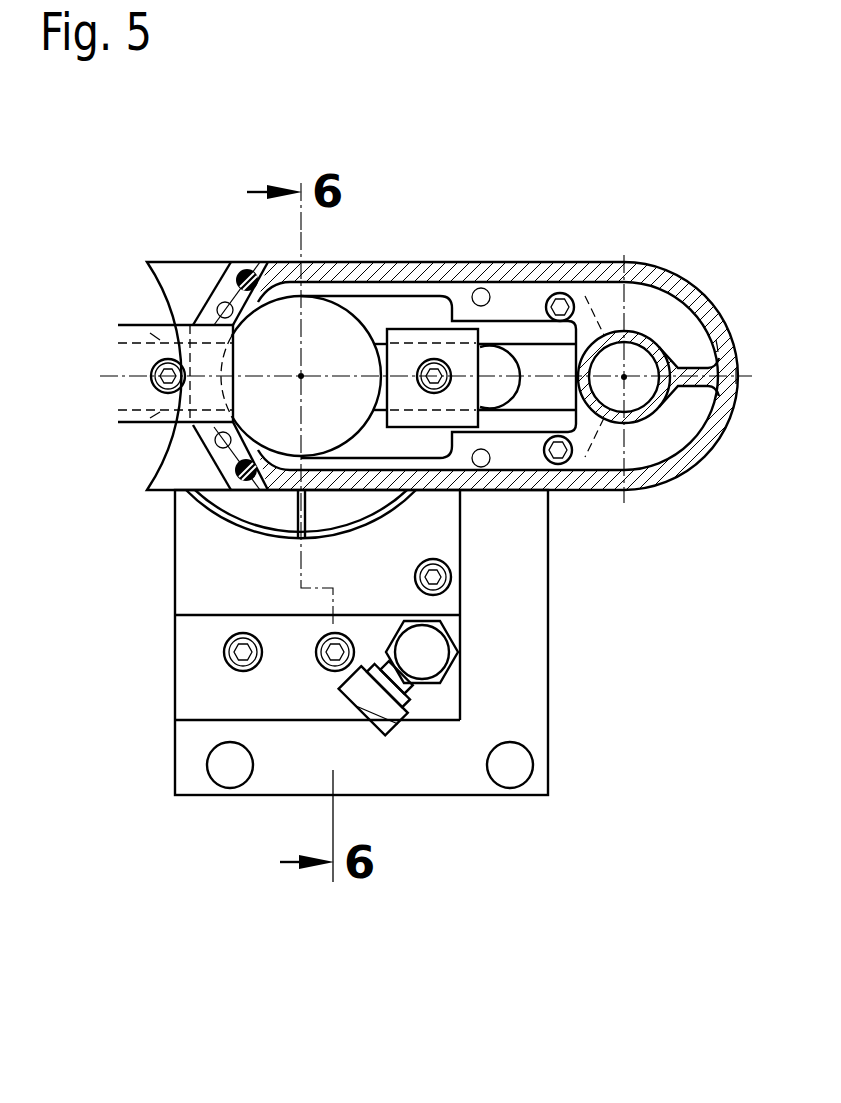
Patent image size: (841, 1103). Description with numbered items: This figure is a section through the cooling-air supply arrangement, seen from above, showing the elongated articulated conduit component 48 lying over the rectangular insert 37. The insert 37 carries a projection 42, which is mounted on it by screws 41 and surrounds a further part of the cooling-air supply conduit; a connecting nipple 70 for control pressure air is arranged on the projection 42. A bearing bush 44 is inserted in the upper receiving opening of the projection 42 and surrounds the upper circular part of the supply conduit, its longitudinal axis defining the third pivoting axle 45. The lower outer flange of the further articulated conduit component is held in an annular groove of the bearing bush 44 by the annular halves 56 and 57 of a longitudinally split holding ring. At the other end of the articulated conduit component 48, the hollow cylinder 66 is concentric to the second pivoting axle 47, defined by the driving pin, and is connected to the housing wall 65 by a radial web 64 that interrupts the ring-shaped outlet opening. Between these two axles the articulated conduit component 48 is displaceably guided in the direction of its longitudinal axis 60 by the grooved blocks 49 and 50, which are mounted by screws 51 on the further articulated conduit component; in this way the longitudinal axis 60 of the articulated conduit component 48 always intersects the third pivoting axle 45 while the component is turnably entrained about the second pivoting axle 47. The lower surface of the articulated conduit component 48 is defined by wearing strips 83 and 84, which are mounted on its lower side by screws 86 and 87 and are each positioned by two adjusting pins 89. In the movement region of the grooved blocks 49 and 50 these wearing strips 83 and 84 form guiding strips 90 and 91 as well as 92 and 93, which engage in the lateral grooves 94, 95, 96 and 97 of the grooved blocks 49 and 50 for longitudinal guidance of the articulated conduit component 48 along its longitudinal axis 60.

The insert 37 is at (549, 688).
The screws 41 is at (452, 577).
The projection 42 is at (461, 680).
The bearing bush 44 is at (307, 540).
The third pivoting axle 45 is at (303, 378).
The second pivoting axle 47 is at (648, 348).
The articulated conduit component 48 is at (716, 298).
The grooved block 49 is at (133, 354).
The grooved block 50 is at (397, 358).
The screws 51 is at (150, 382).
The annular half 56 is at (213, 492).
The annular half 57 is at (358, 505).
The longitudinal axis 60 is at (745, 371).
The radial web 64 is at (690, 387).
The housing wall 65 is at (722, 336).
The hollow cylinder 66 is at (652, 410).
The connecting nipple 70 is at (410, 688).
The wearing strip 83 is at (585, 290).
The wearing strip 84 is at (603, 470).
The screws 86 is at (247, 270).
The screws 87 is at (558, 294).
The adjusting pins 89 is at (224, 302).
The guiding strip 90 is at (520, 334).
The guiding strip 91 is at (214, 335).
The guiding strip 92 is at (513, 424).
The guiding strip 93 is at (232, 410).
The lateral groove 94 is at (408, 341).
The lateral groove 95 is at (158, 338).
The lateral groove 96 is at (160, 412).
The lateral groove 97 is at (476, 400).